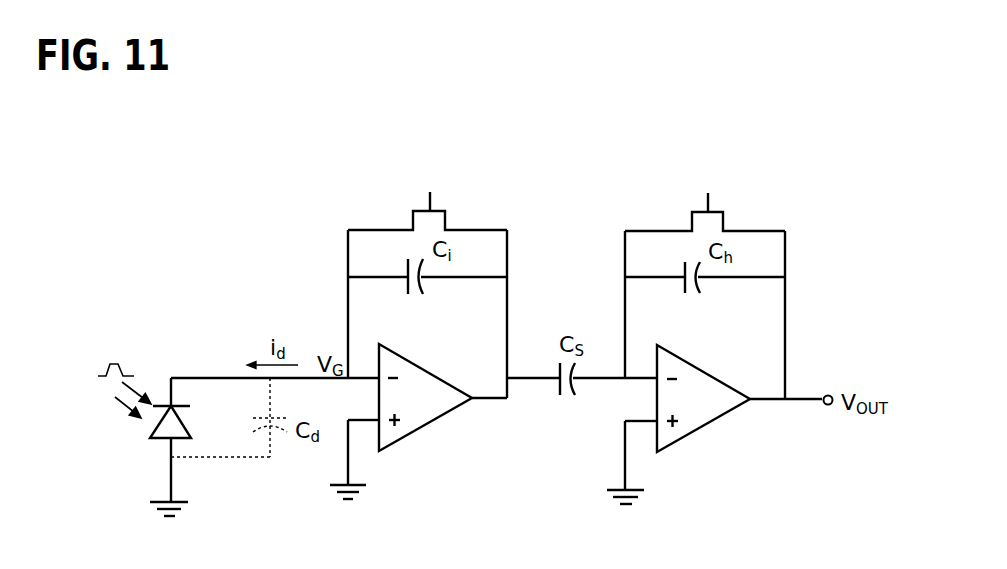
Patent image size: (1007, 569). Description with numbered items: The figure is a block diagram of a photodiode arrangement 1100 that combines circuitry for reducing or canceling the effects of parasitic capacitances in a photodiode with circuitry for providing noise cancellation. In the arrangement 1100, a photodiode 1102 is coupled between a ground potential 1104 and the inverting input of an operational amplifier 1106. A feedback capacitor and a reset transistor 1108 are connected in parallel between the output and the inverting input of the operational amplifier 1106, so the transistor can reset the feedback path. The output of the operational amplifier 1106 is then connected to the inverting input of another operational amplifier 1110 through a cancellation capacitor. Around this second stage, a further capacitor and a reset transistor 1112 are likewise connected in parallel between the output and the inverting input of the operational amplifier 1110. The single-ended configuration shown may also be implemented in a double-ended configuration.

The photodiode arrangement 1100 is at (258, 118).
The photodiode 1102 is at (117, 431).
The ground potential 1104 is at (183, 500).
The operational amplifier 1106 is at (413, 432).
The reset transistor 1108 is at (443, 210).
The operational amplifier 1110 is at (693, 433).
The reset transistor 1112 is at (722, 211).